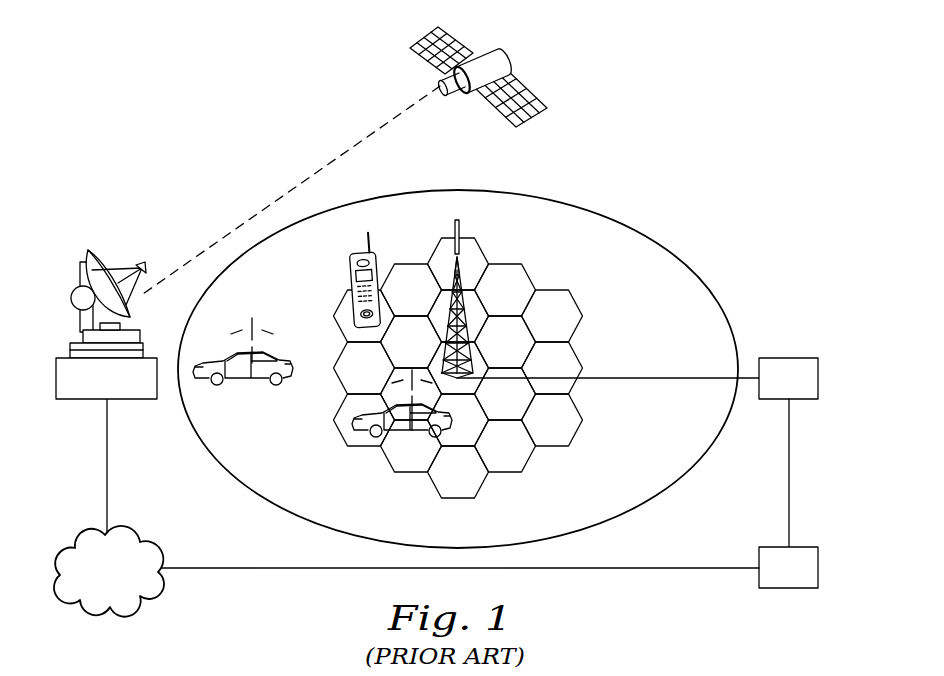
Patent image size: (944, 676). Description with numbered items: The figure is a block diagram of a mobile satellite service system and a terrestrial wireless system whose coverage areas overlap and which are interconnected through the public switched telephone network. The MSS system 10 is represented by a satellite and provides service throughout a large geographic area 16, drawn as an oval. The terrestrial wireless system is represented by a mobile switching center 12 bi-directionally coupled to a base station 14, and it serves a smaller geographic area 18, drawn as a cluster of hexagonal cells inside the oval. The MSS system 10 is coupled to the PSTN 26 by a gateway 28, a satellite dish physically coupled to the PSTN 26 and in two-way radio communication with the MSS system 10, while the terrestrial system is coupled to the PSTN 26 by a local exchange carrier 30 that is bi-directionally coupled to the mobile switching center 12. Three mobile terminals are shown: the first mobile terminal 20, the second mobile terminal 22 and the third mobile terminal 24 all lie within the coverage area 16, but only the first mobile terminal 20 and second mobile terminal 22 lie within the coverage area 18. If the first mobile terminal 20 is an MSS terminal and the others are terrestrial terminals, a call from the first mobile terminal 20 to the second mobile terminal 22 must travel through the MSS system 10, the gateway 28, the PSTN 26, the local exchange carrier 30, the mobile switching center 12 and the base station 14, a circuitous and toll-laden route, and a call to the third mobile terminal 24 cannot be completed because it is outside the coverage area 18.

The MSS system 10 is at (506, 60).
The mobile switching center 12 is at (792, 358).
The base station 14 is at (460, 232).
The geographic area 16 is at (603, 212).
The geographic area 18 is at (575, 340).
The first mobile terminal 20 is at (350, 278).
The second mobile terminal 22 is at (355, 420).
The third mobile terminal 24 is at (245, 382).
The PSTN 26 is at (88, 530).
The gateway 28 is at (103, 262).
The local exchange carrier 30 is at (818, 573).